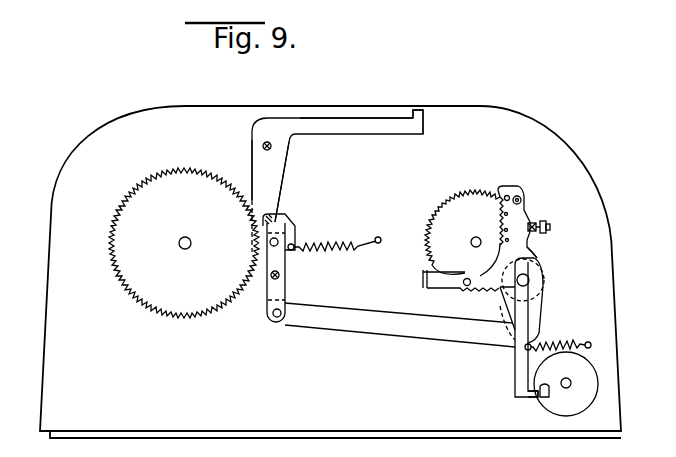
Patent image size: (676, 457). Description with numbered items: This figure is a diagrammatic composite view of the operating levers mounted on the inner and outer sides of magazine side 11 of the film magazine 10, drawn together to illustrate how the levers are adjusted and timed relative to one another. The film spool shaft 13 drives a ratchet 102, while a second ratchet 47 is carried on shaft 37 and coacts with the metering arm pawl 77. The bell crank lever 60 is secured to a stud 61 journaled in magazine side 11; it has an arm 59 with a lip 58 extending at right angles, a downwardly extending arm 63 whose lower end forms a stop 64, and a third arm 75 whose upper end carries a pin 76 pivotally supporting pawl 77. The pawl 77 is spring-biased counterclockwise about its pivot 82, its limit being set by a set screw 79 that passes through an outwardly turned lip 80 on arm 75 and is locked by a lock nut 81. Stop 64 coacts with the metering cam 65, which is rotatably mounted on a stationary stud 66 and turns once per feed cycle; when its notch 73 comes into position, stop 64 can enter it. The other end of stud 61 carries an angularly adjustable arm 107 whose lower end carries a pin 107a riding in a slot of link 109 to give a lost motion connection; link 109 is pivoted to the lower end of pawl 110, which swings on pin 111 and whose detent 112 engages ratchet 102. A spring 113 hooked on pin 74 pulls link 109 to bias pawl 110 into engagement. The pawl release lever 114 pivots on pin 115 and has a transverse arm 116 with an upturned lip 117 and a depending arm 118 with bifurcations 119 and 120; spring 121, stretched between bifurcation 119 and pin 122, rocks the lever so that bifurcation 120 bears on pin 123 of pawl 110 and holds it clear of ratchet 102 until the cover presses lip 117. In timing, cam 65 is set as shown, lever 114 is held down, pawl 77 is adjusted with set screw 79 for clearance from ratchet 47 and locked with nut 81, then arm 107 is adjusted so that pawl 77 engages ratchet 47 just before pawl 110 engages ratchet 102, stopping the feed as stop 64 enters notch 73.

The housing 10 is at (58, 186).
The magazine side 11 is at (53, 273).
The gear shaft 13 is at (183, 237).
The ratchet wheel shaft 37 is at (471, 241).
The ratchet 47 is at (438, 210).
The lip 58 is at (422, 275).
The arm 59 is at (443, 281).
The bell crank 60 is at (533, 253).
The stud 61 is at (529, 278).
The downwardly extending arm 63 is at (514, 362).
The stop 64 is at (527, 397).
The metering cam 65 is at (603, 365).
The stationary shaft or stud 66 is at (570, 386).
The notch 73 is at (541, 398).
The spring pin 74 is at (548, 347).
The third arm 75 is at (504, 236).
The pin 76 is at (521, 200).
The pawl 77 is at (516, 190).
The set screw 79 is at (530, 221).
The outwardly turned lip 80 is at (543, 221).
The lock nut 81 is at (550, 230).
The pawl 82 is at (503, 195).
The ratchet 102 is at (153, 170).
The arm 107 is at (540, 303).
The pin 107a is at (507, 330).
The link 109 is at (370, 330).
The pawl 110 is at (277, 290).
The pin 111 is at (281, 275).
The detent 112 is at (273, 218).
The spring 113 is at (563, 337).
The lever 114 is at (303, 113).
The pin 115 is at (263, 143).
The transversely extending arm 116 is at (361, 125).
The upturned lip 117 is at (417, 110).
The depending arm 118 is at (272, 165).
The bifurcation 119 is at (294, 241).
The bifurcation 120 is at (253, 242).
The spring 121 is at (344, 242).
The pin 122 is at (379, 237).
The pin 123 is at (270, 247).